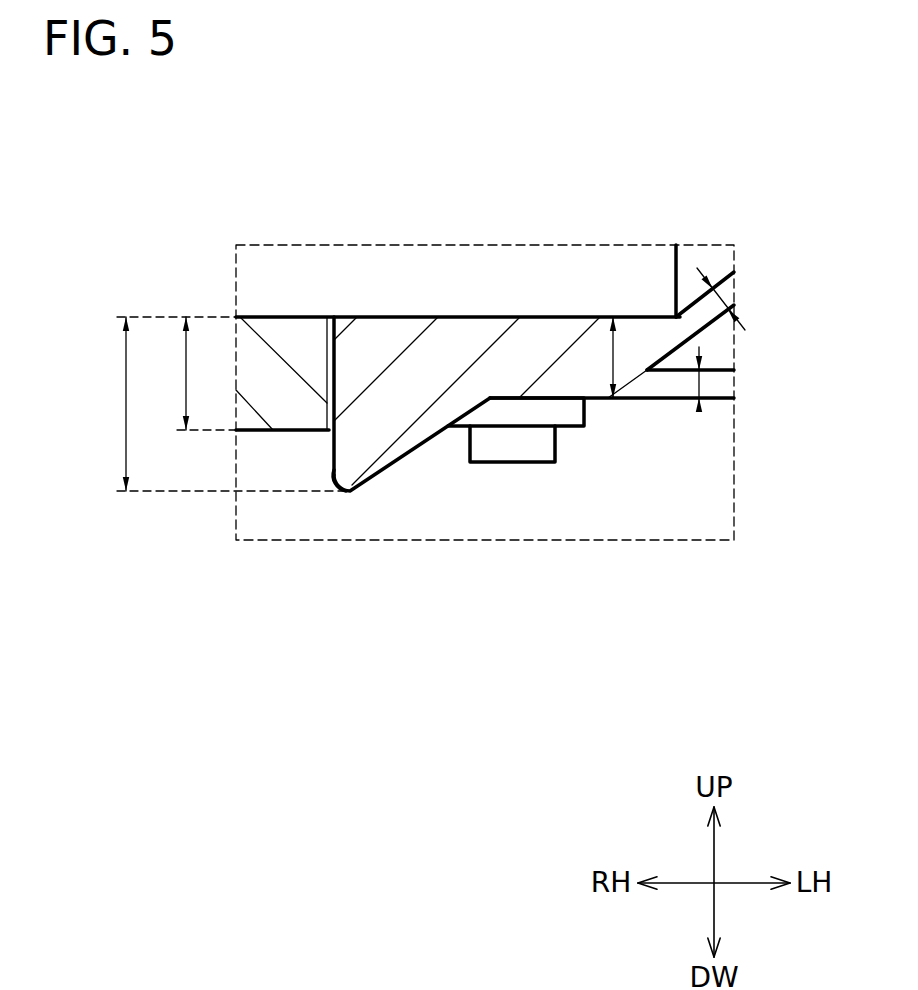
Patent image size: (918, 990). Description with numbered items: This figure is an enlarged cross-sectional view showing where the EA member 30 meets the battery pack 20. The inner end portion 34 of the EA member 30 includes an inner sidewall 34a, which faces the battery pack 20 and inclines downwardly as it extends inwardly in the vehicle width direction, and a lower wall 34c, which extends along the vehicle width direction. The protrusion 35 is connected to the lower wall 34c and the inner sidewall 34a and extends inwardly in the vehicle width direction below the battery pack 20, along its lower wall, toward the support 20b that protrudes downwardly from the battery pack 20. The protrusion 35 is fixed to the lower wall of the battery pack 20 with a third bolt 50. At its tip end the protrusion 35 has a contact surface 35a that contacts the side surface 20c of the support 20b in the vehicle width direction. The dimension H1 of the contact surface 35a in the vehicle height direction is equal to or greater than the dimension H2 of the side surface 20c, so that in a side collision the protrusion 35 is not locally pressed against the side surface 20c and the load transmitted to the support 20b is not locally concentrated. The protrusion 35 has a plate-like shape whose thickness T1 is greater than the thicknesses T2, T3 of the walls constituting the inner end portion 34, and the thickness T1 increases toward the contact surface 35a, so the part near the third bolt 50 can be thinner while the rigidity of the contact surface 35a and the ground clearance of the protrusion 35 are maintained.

The battery pack 20 is at (412, 390).
The support 20b is at (298, 345).
The side surface 20c is at (334, 383).
The EA member 30 is at (795, 270).
The inner end portion 34 is at (542, 380).
The inner sidewall 34a is at (693, 288).
The lower wall 34c is at (713, 375).
The protrusion 35 is at (363, 453).
The contact surface 35a is at (334, 468).
The third bolt 50 is at (520, 450).
The thickness of the protrusion T1 is at (613, 357).
The thickness of the inner end portion wall T2 is at (727, 297).
The thickness of the inner end portion wall T3 is at (693, 378).
The dimension of the contact surface H1 is at (215, 404).
The dimension of the side surface H2 is at (189, 373).